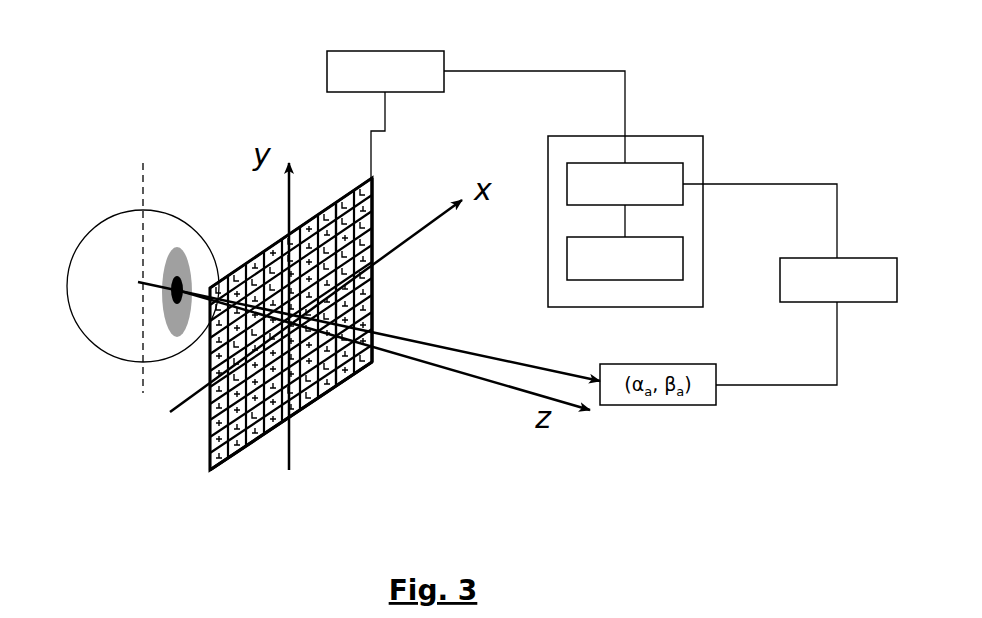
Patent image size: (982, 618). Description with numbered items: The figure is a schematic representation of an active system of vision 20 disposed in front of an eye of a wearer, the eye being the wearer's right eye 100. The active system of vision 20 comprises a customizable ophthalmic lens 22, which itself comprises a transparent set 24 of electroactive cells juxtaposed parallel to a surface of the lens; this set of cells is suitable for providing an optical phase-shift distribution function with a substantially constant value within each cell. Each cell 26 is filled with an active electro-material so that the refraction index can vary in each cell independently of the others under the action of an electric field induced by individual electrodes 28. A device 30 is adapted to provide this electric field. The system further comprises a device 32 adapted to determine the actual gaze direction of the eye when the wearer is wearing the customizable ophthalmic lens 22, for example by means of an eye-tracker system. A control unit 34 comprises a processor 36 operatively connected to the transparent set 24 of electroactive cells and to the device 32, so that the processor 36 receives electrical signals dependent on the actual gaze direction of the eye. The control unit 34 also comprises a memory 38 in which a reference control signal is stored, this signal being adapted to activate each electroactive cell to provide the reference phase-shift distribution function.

The right eye 100 is at (105, 255).
The active system of vision 20 is at (752, 88).
The customizable ophthalmic lens 22 is at (183, 466).
The transparent set of electroactive cells 24 is at (373, 202).
The cell 26 is at (340, 380).
The individual electrodes 28 is at (228, 460).
The device adapted to provide the electric field 30 is at (476, 114).
The device for determining the actual gaze direction 32 is at (806, 321).
The control unit 34 is at (548, 250).
The processor 36 is at (702, 210).
The memory 38 is at (625, 258).